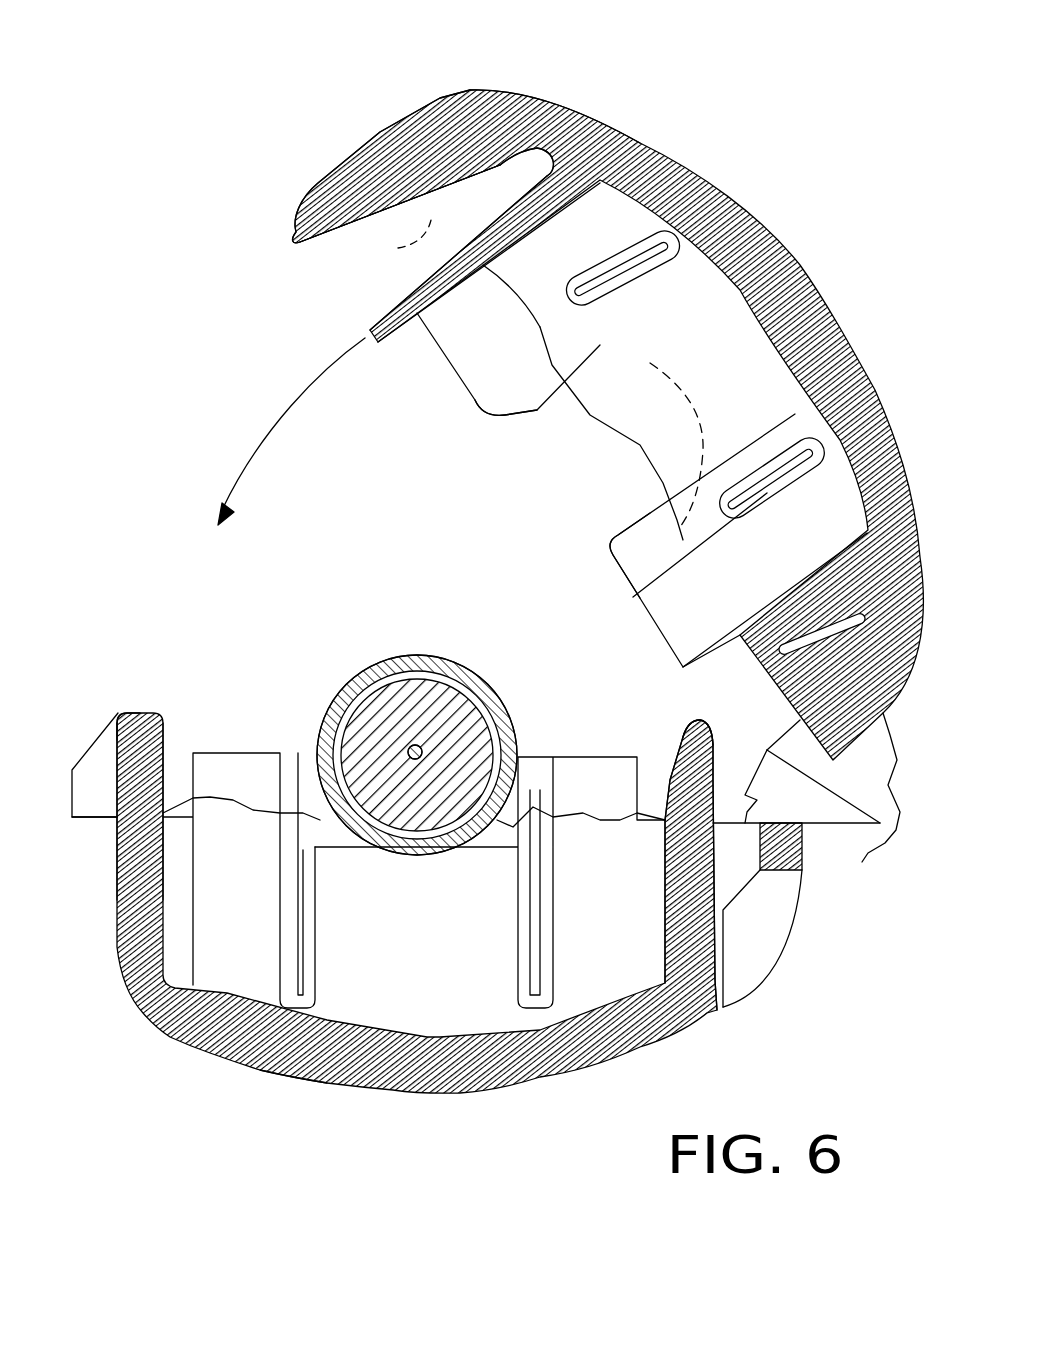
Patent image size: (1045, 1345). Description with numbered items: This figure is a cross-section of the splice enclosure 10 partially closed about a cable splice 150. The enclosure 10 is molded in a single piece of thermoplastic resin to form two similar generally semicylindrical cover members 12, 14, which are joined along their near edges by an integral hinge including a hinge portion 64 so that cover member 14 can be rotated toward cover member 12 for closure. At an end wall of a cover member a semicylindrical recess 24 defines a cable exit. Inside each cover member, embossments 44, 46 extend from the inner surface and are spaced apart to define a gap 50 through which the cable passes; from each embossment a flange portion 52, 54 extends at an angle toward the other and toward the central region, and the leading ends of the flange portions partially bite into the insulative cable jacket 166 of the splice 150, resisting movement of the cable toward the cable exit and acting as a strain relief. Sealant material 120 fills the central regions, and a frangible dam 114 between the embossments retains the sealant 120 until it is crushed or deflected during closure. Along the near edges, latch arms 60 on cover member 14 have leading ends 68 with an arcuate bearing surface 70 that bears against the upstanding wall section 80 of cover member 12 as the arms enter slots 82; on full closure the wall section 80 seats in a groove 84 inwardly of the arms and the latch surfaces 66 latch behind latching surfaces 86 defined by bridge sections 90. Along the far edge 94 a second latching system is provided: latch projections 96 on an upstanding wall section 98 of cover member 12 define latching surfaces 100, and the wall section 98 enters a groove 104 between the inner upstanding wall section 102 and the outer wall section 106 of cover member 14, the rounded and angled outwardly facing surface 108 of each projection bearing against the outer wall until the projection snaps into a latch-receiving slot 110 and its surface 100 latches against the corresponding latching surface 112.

The splice enclosure 10 is at (195, 303).
The cover member 12 is at (120, 987).
The cover member 14 is at (677, 158).
The semicylindrical recess 24 is at (600, 425).
The embossment 44 is at (587, 773).
The embossment 46 is at (228, 768).
The gap 50 is at (567, 473).
The flange portion 52 is at (540, 398).
The flange portion 54 is at (612, 538).
The latch arm 60 is at (740, 753).
The hinge portion 64 is at (898, 815).
The latch surface 66 is at (777, 753).
The leading end 68 is at (713, 813).
The arcuate bearing surface 70 is at (700, 733).
The upstanding wall section 80 is at (690, 760).
The slot 82 is at (758, 843).
The groove 84 is at (758, 662).
The latching surface 86 is at (793, 883).
The bridge section 90 is at (787, 843).
The far edge 94 is at (333, 172).
The latch projection 96 is at (97, 732).
The upstanding wall section 98 is at (137, 735).
The latching surface 100 is at (117, 818).
The inner upstanding wall section 102 is at (372, 335).
The groove 104 is at (372, 148).
The outer wall section 106 is at (293, 240).
The outwardly facing surface 108 is at (117, 713).
The latch-receiving slot 110 is at (519, 108).
The latching surface 112 is at (420, 128).
The frangible dam 114 is at (293, 1007).
The sealant material 120 is at (230, 938).
The cable splice 150 is at (410, 645).
The insulative cable jacket 166 is at (393, 663).